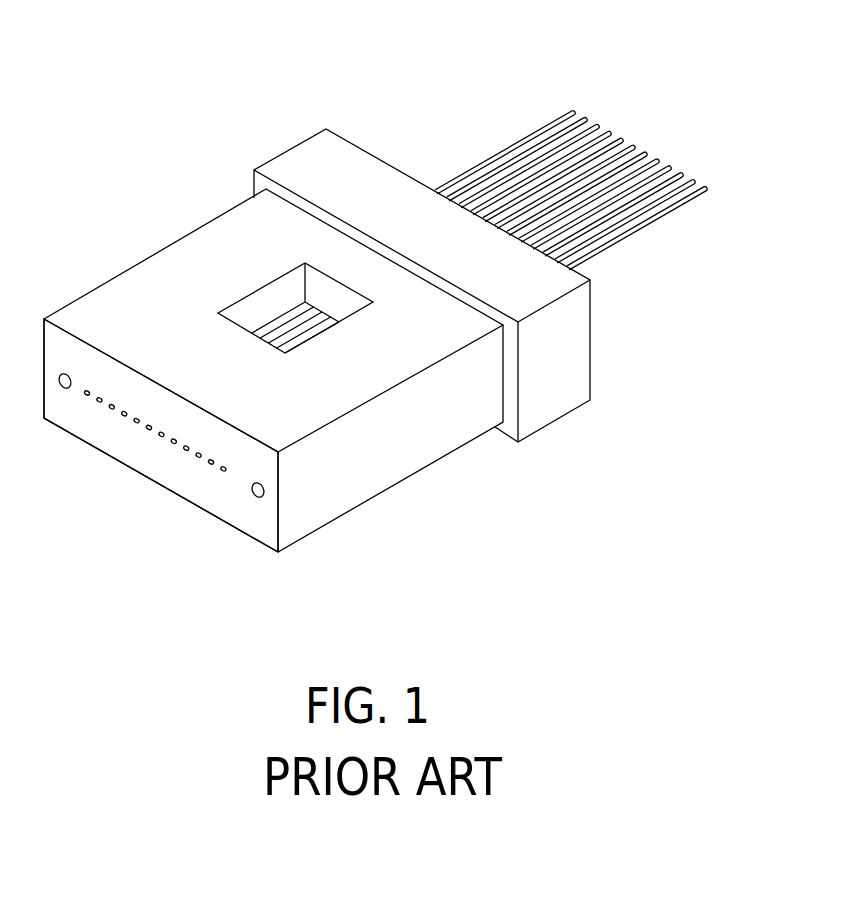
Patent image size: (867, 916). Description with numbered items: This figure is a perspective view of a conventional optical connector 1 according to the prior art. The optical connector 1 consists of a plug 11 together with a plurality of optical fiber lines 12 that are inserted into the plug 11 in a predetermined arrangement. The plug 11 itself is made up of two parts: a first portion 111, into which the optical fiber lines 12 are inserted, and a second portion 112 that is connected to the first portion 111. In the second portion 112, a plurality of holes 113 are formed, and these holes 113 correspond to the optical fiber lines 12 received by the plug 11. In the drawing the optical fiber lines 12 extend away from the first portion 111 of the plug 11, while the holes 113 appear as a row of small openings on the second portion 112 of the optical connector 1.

The optical connector 1 is at (193, 101).
The plug 11 is at (81, 264).
The first portion 111 is at (411, 177).
The second portion 112 is at (222, 505).
The holes 113 is at (136, 423).
The optical fiber lines 12 is at (543, 140).